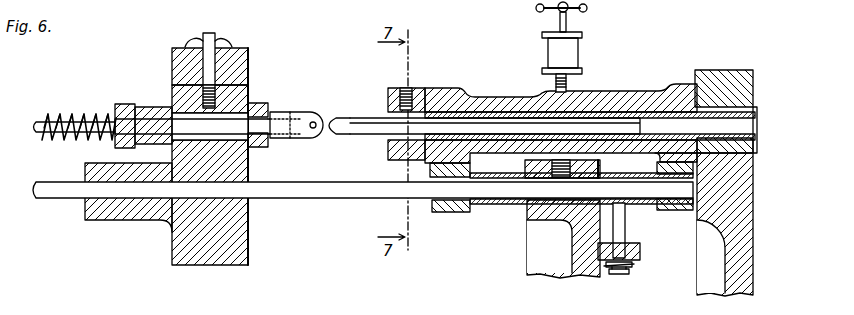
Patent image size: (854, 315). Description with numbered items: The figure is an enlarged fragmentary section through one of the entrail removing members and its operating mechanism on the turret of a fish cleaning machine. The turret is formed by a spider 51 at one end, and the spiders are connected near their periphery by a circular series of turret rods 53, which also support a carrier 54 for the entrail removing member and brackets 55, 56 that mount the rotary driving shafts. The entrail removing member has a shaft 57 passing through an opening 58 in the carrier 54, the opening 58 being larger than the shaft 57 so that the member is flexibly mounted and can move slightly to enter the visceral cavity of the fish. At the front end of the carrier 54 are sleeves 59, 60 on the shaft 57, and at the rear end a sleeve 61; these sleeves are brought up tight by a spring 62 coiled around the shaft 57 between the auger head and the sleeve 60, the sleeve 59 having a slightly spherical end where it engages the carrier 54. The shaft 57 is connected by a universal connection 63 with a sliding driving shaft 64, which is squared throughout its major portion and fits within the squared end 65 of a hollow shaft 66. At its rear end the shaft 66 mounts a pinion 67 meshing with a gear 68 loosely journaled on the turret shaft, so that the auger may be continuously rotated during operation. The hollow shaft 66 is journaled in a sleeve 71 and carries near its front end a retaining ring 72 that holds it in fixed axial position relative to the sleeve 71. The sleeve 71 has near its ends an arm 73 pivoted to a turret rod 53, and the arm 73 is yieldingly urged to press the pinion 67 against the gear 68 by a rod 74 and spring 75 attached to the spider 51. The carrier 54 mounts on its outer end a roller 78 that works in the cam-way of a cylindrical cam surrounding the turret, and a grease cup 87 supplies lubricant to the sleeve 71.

The spider 51 is at (576, 244).
The turret rods 53 is at (343, 196).
The carrier 54 is at (245, 245).
The bracket 55 is at (665, 210).
The bracket 56 is at (445, 212).
The shaft 57 is at (224, 128).
The opening 58 is at (207, 140).
The sleeve 59 is at (150, 107).
The sleeve 60 is at (120, 104).
The sleeve 61 is at (262, 105).
The spring 62 is at (66, 116).
The universal connection 63 is at (310, 110).
The sliding driving shaft 64 is at (472, 120).
The squared end 65 is at (386, 138).
The shaft 66 is at (588, 104).
The pinion 67 is at (725, 70).
The gear 68 is at (722, 242).
The sleeve 71 is at (668, 83).
The retaining ring 72 is at (390, 88).
The arm 73 is at (470, 162).
The rod 74 is at (618, 222).
The spring 75 is at (604, 272).
The roller 78 is at (248, 60).
The grease cup 87 is at (582, 50).